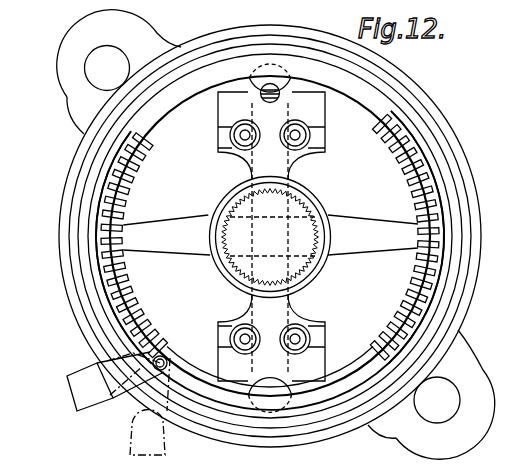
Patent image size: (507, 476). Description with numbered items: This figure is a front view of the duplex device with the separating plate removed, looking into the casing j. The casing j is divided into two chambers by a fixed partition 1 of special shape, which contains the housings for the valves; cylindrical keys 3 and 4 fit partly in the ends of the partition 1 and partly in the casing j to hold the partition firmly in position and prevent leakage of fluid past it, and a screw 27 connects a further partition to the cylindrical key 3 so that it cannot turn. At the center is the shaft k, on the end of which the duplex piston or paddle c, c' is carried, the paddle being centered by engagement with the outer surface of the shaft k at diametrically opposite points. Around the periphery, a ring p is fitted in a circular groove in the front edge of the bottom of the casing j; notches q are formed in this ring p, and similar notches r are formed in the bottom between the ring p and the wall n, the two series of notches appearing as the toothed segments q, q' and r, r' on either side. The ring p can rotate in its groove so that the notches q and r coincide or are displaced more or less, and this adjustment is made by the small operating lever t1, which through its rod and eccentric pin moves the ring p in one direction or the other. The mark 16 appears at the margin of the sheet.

The casing j is at (401, 77).
The ring p is at (340, 388).
The wall n is at (350, 371).
The notches r is at (403, 237).
The rack ring left r' is at (136, 247).
The notches q is at (426, 237).
The toothed segment left q' is at (102, 245).
The piston or paddle c is at (373, 235).
The piston or paddle c' is at (166, 235).
The shaft k is at (270, 237).
The fixed partition 1 is at (271, 236).
The cylindrical key 3 is at (268, 80).
The screw 27 is at (281, 99).
The cylindrical key 4 is at (270, 395).
The operating lever t1 is at (118, 403).
The sheet mark 16 is at (495, 380).